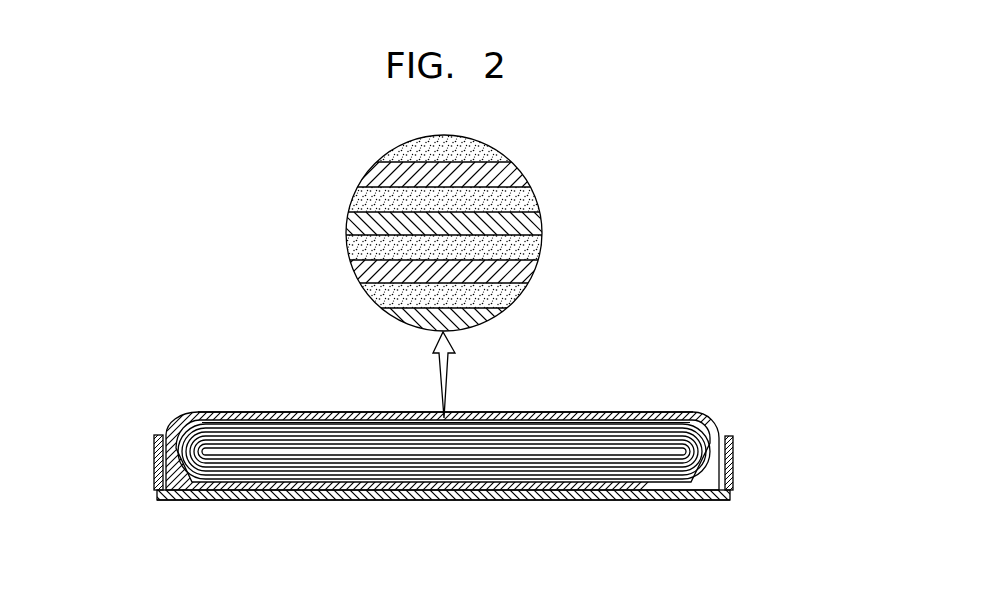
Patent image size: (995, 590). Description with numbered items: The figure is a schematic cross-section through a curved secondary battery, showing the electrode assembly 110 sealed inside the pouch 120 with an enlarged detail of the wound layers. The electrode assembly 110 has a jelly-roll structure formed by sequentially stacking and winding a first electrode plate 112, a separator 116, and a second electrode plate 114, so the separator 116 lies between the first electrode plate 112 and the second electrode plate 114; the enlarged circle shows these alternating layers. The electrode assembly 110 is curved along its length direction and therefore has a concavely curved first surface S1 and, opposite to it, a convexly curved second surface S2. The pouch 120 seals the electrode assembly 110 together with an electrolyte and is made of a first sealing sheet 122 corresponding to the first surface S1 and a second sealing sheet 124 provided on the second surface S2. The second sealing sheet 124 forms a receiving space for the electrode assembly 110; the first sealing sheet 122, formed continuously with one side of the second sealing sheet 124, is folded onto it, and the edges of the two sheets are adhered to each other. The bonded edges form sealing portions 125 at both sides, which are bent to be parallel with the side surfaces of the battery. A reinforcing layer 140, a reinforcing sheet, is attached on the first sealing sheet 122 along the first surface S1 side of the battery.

The electrode assembly 110 is at (634, 445).
The first electrode plate 112 is at (540, 226).
The second electrode plate 114 is at (535, 275).
The separator 116 is at (542, 250).
The pouch 120 is at (307, 337).
The first sealing sheet 122 is at (288, 425).
The second sealing sheet 124 is at (230, 411).
The sealing portions 125 is at (153, 452).
The reinforcing layer 140 is at (390, 500).
The first surface S1 is at (540, 500).
The second surface S2 is at (545, 411).